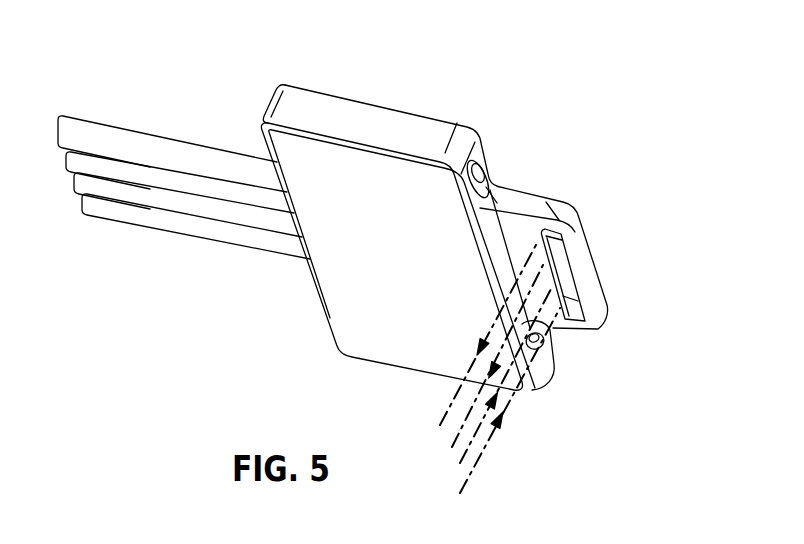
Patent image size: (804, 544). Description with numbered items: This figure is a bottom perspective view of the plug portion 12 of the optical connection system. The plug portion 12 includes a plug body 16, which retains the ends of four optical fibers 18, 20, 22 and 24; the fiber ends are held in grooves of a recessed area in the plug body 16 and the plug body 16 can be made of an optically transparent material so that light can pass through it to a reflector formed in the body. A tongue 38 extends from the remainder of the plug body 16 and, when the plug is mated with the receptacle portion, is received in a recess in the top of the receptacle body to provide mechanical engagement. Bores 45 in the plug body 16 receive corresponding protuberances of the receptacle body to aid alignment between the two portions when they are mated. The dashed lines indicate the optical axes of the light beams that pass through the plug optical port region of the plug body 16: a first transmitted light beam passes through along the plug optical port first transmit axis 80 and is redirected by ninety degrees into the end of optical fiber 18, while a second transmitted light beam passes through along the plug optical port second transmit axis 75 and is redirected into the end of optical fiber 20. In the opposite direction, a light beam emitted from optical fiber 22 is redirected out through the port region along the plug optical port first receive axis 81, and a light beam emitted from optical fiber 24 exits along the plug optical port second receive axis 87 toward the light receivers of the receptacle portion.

The plug portion 12 is at (622, 100).
The plug body 16 is at (394, 104).
The optical fiber 18 is at (178, 140).
The optical fiber 20 is at (102, 170).
The optical fiber 22 is at (130, 197).
The optical fiber 24 is at (170, 232).
The tongue 38 is at (586, 246).
The bore 45 is at (468, 181).
The plug optical port second transmit axis 75 is at (457, 463).
The plug optical port first transmit axis 80 is at (463, 483).
The plug optical port first receive axis 81 is at (448, 438).
The plug optical port second receive axis 87 is at (456, 388).